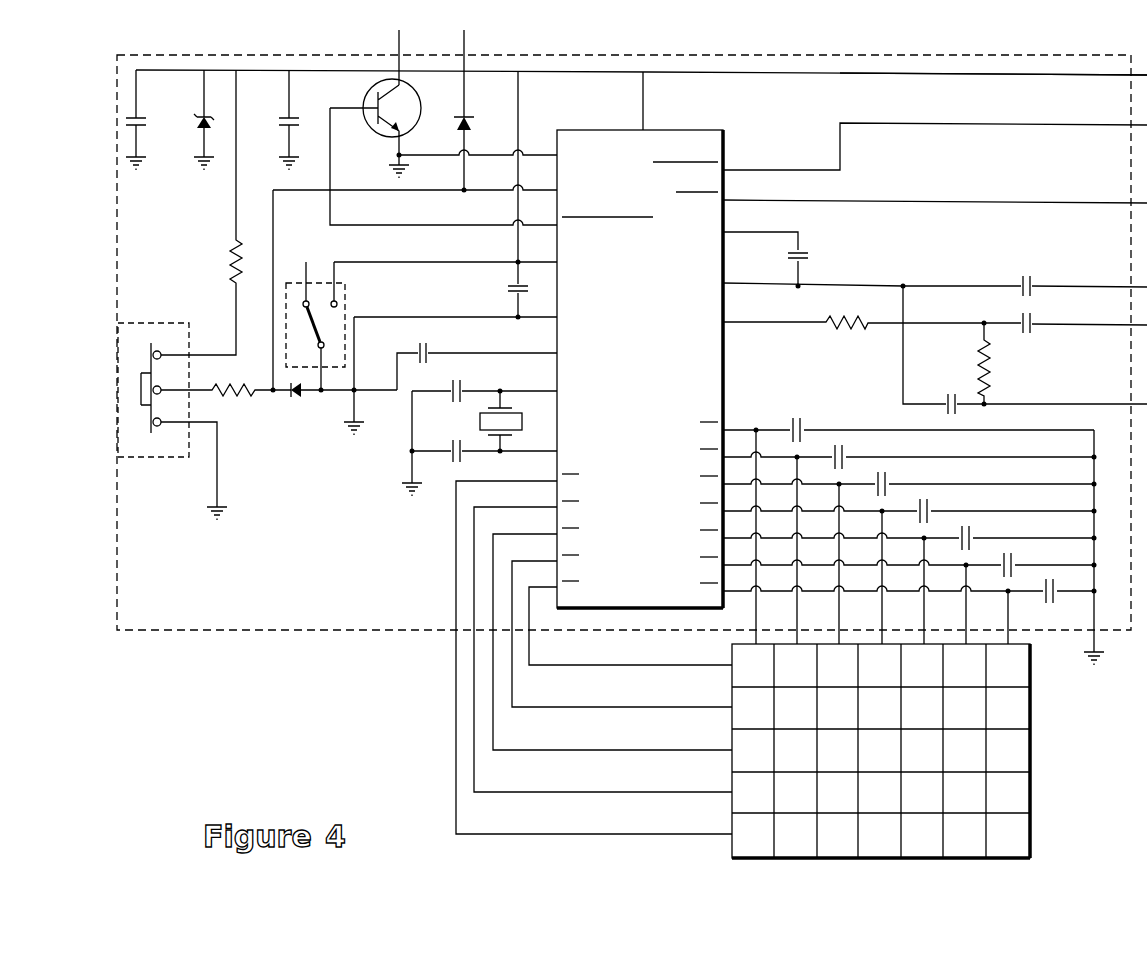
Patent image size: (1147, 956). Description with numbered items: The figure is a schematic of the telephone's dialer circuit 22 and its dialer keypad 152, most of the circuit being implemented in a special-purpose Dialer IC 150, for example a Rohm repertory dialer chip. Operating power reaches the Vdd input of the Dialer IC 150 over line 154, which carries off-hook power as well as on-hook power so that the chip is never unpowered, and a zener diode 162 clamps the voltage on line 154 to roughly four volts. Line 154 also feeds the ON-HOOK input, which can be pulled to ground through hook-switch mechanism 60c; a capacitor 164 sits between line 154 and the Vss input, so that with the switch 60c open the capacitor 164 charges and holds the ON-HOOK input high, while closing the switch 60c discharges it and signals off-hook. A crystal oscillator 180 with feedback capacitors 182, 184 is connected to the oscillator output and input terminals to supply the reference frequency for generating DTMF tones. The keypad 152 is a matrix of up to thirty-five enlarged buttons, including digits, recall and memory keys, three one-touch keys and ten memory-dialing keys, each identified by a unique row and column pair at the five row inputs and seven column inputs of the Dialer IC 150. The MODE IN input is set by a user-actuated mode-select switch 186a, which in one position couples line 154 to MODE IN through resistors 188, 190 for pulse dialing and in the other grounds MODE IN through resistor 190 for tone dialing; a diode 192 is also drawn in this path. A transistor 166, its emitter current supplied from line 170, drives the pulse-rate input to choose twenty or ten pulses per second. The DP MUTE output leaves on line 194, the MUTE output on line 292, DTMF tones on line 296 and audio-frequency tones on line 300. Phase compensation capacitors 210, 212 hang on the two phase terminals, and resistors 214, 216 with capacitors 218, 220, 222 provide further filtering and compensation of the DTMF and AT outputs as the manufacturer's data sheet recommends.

The dialer circuit 22 is at (293, 630).
The hook-switch switching mechanism 60c is at (347, 292).
The Dialer IC 150 is at (728, 133).
The dialer keypad 152 is at (1033, 760).
The line 154 is at (1108, 78).
The zener diode 162 is at (196, 126).
The capacitor 164 is at (506, 288).
The transistor 166 is at (374, 129).
The line 170 is at (397, 73).
The crystal oscillator 180 is at (488, 419).
The feedback capacitor 182 is at (466, 387).
The feedback capacitor 184 is at (470, 452).
The mode-select switch 186a is at (166, 323).
The resistor 188 is at (228, 261).
The resistor 190 is at (240, 397).
The diode 192 is at (298, 397).
The line 194 is at (1006, 125).
The phase compensation capacitor 210 is at (812, 255).
The phase compensation capacitor 212 is at (427, 347).
The resistor 214 is at (840, 330).
The resistor 216 is at (991, 370).
The capacitor 218 is at (1035, 334).
The capacitor 220 is at (948, 395).
The capacitor 222 is at (1035, 293).
The line 292 is at (957, 203).
The line 296 is at (1116, 286).
The line 300 is at (1113, 326).